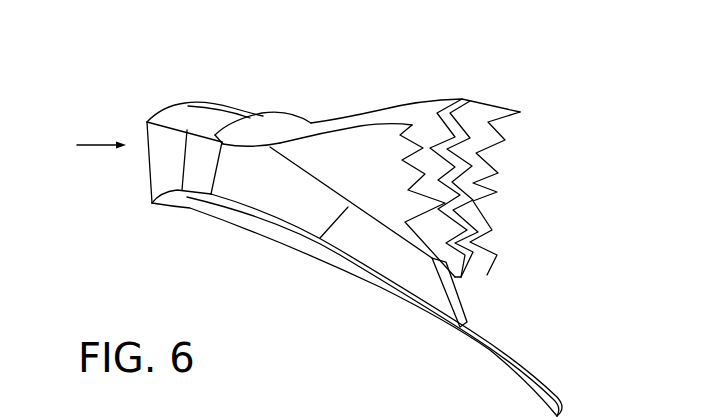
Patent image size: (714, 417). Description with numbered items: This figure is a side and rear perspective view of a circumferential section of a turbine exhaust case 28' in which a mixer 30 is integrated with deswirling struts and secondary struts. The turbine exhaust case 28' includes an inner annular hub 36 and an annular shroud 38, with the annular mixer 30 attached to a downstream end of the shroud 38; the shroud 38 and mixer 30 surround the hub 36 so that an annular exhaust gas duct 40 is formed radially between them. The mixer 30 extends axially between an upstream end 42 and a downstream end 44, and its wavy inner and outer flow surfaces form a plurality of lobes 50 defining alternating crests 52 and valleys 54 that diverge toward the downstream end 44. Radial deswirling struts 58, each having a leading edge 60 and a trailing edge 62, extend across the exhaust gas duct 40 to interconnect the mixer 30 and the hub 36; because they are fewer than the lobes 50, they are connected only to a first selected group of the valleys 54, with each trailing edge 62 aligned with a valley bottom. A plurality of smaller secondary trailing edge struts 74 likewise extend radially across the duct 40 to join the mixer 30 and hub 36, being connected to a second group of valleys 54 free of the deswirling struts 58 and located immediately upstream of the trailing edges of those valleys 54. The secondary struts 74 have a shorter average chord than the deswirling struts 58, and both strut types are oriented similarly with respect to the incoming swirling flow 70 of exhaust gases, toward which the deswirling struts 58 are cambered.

The turbine exhaust case 28' is at (162, 109).
The mixer 30 is at (312, 122).
The annular hub 36 is at (217, 218).
The annular shroud 38 is at (232, 104).
The annular exhaust gas duct 40 is at (263, 186).
The upstream end 42 is at (262, 113).
The downstream end 44 is at (488, 177).
The lobes 50 is at (487, 141).
The crests 52 is at (432, 99).
The valleys 54 is at (470, 273).
The deswirling struts 58 is at (363, 240).
The leading edge 60 is at (334, 222).
The trailing edge 62 is at (427, 264).
The incoming swirling flow 70 is at (103, 143).
The secondary trailing edge struts 74 is at (465, 301).